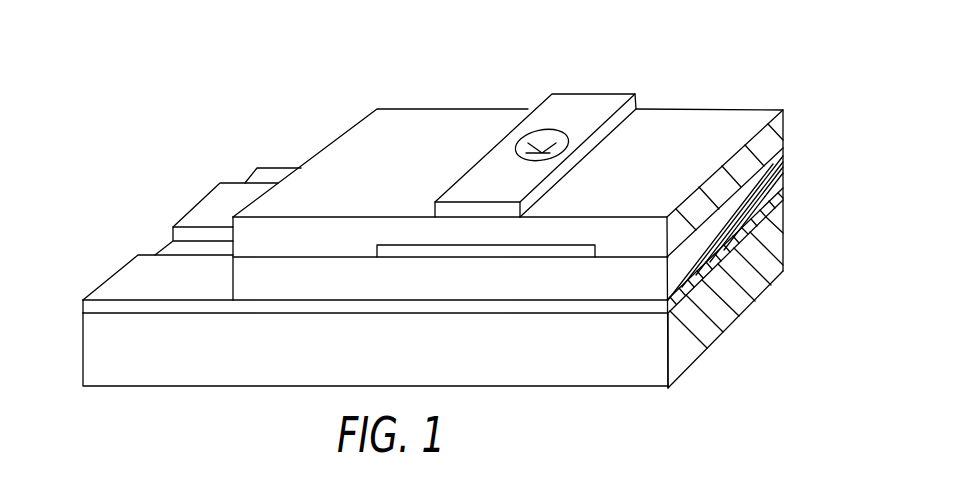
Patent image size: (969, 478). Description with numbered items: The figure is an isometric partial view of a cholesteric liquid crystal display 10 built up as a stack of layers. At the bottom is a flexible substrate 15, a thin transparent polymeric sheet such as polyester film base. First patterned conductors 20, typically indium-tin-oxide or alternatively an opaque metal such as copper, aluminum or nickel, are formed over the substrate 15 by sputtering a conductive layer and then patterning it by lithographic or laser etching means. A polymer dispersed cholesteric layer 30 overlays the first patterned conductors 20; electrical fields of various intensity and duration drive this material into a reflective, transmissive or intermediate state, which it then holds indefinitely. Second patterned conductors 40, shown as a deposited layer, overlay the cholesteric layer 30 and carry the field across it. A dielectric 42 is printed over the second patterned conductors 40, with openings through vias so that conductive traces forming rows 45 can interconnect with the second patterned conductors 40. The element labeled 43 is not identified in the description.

The display 10 is at (148, 110).
The flexible substrate 15 is at (748, 292).
The first patterned conductors 20 is at (123, 280).
The polymer dispersed cholesteric layer 30 is at (773, 175).
The second patterned conductors 40 is at (400, 243).
The dielectric 42 is at (402, 122).
The light emission indicator 43 is at (535, 141).
The rows 45 is at (603, 97).